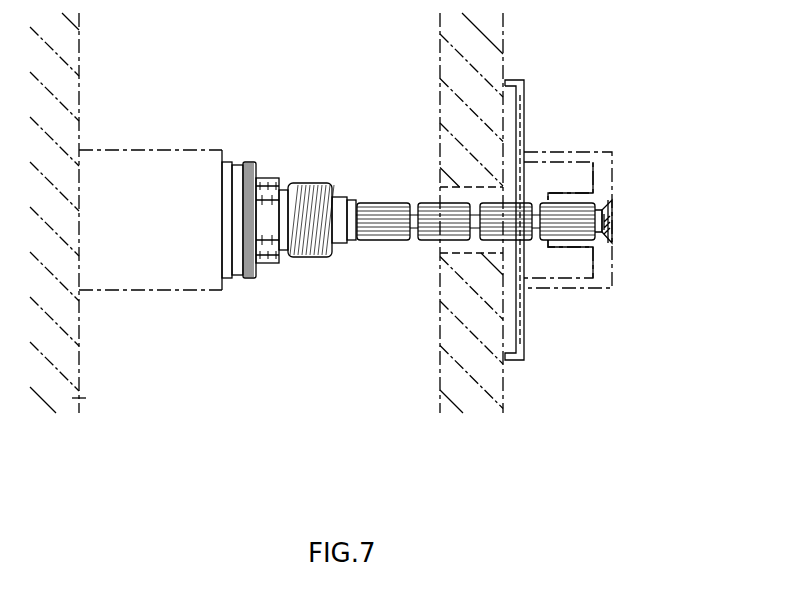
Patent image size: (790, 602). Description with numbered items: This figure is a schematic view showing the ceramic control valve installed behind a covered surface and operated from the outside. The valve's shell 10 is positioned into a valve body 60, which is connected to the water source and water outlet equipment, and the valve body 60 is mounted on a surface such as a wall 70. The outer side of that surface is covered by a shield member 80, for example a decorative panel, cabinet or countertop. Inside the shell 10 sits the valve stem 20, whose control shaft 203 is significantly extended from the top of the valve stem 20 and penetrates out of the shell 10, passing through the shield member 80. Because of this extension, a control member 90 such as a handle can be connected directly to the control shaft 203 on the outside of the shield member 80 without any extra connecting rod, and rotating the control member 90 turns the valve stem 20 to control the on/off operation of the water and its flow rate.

The shell 10 is at (236, 278).
The valve stem 20 is at (384, 201).
The valve body 60 is at (150, 289).
The wall 70 is at (79, 399).
The shield member 80 is at (503, 383).
The control member 90 is at (612, 172).
The control shaft 203 is at (603, 236).